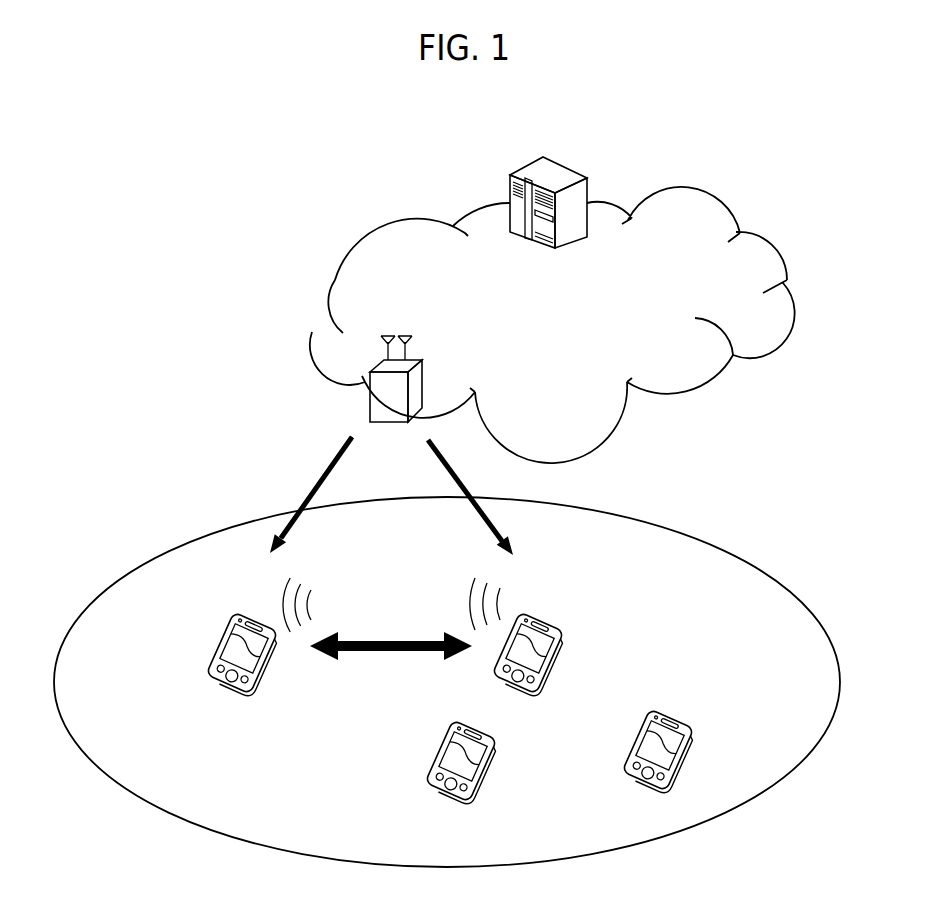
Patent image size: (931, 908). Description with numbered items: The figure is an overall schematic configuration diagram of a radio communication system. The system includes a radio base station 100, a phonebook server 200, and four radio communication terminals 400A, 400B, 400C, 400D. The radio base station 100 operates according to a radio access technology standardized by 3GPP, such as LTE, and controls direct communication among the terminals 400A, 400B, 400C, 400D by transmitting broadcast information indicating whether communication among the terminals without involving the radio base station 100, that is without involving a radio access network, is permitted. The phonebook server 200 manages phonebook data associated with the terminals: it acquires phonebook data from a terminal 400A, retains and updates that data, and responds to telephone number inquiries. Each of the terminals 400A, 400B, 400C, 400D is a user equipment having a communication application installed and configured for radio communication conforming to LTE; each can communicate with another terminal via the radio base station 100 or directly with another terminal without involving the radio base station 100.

The radio base station 100 is at (420, 378).
The phonebook server 200 is at (565, 162).
The radio communication terminal 400A is at (222, 628).
The radio communication terminal 400B is at (565, 636).
The radio communication terminal 400C is at (490, 777).
The radio communication terminal 400D is at (675, 716).